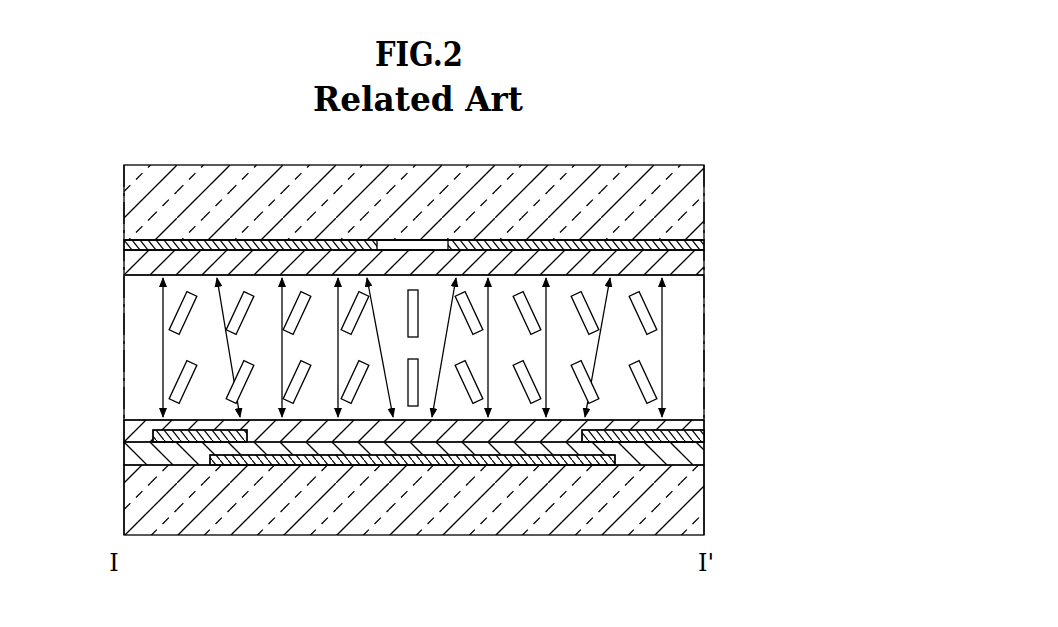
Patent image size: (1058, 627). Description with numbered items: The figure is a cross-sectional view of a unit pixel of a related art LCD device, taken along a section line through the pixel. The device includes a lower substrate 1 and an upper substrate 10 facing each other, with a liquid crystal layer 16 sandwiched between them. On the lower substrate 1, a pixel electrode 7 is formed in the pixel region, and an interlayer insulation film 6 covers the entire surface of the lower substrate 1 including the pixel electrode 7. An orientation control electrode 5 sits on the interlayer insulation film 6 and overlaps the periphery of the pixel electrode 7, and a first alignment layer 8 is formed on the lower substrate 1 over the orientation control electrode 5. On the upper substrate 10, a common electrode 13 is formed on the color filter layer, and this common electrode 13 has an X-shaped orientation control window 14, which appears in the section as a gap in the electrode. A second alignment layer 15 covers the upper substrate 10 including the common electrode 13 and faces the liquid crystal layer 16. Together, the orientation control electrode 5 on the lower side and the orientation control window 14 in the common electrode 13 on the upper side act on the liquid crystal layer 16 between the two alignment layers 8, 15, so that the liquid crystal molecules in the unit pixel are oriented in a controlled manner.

The lower substrate 1 is at (698, 503).
The orientation control electrode 5 is at (683, 438).
The interlayer insulation film 6 is at (698, 455).
The pixel electrode 7 is at (552, 462).
The first alignment layer 8 is at (153, 437).
The upper substrate 10 is at (697, 200).
The common electrode 13 is at (704, 248).
The orientation control window 14 is at (416, 252).
The second alignment layer 15 is at (697, 263).
The liquid crystal layer 16 is at (698, 352).